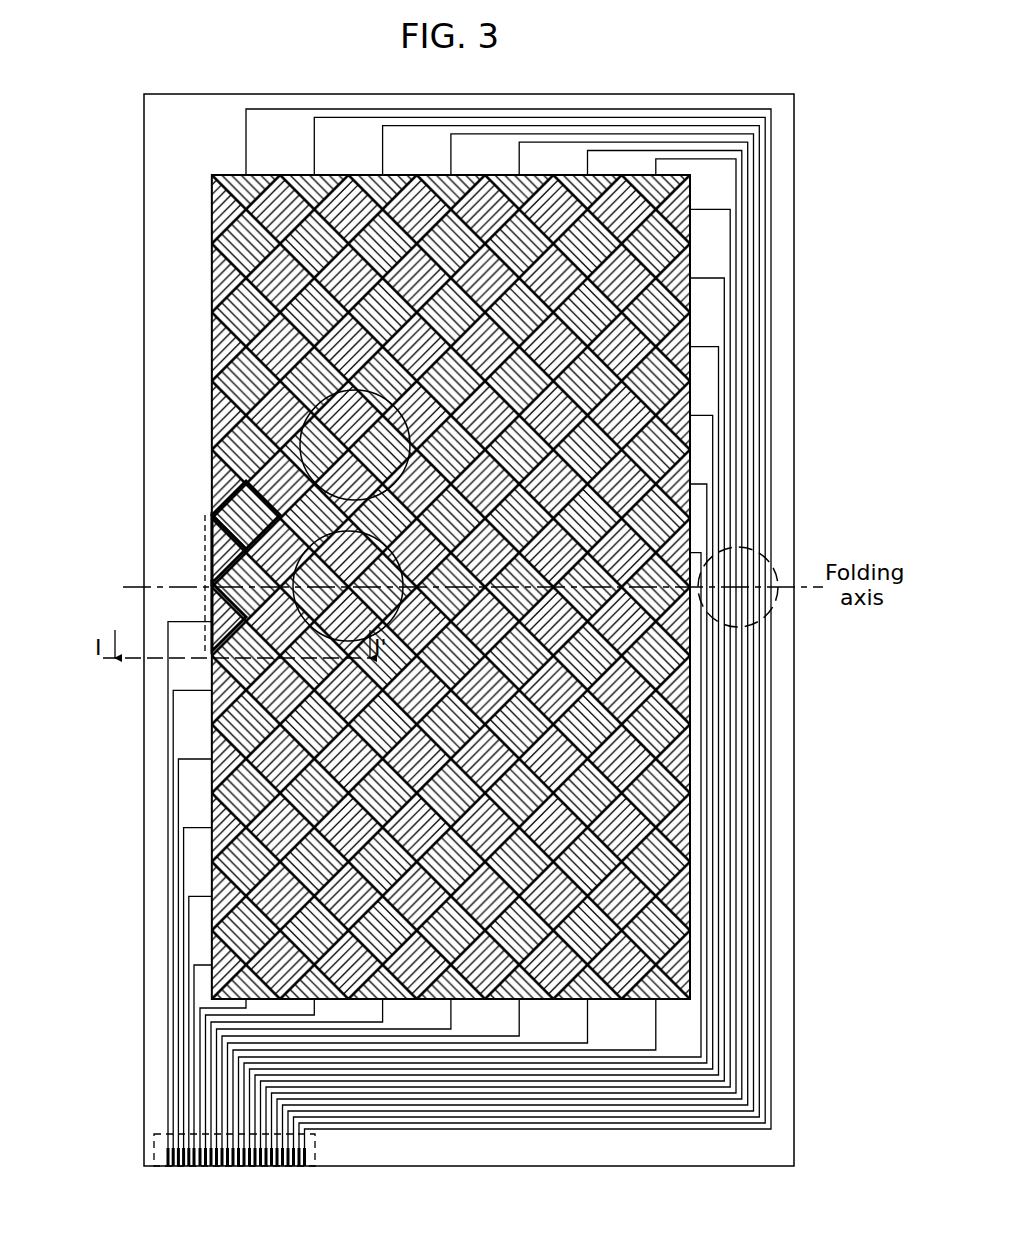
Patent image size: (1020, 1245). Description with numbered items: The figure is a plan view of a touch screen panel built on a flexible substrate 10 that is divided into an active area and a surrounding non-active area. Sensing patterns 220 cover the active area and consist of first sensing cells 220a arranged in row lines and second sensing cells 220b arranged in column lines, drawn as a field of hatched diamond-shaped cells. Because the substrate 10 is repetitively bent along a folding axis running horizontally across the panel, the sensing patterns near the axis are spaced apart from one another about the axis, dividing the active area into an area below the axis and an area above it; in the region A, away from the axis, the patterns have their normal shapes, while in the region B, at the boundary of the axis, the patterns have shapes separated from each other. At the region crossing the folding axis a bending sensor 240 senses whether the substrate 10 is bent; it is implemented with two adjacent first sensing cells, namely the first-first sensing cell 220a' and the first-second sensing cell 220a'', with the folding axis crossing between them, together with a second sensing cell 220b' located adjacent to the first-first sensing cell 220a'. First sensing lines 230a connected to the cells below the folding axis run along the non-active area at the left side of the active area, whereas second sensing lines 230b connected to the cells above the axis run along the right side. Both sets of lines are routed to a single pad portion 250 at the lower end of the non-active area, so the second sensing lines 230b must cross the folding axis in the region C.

The substrate 10 is at (688, 86).
The sensing patterns 220 is at (366, 587).
The first sensing cells 220a is at (390, 587).
The second sensing cells 220b is at (390, 587).
The (1-1)-th sensing cell 220a' is at (150, 549).
The second sensing cell 220b' is at (175, 515).
The (1-2)-th sensing cell 220a'' is at (144, 617).
The first sensing lines 230a is at (160, 722).
The second sensing lines 230b is at (766, 182).
The bending sensor 240 is at (205, 581).
The pad portion 250 is at (306, 1143).
The region A is at (280, 425).
The region B is at (265, 560).
The region C is at (767, 558).